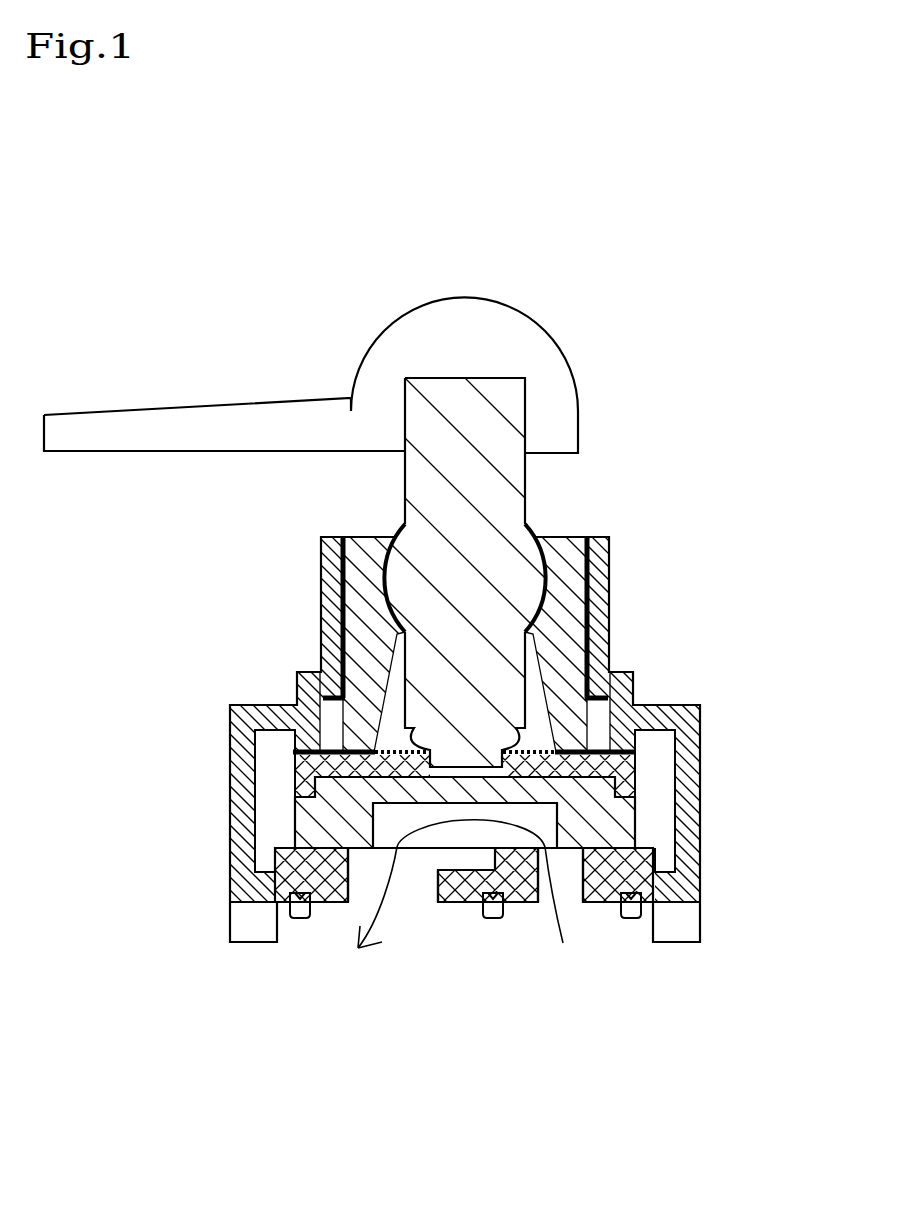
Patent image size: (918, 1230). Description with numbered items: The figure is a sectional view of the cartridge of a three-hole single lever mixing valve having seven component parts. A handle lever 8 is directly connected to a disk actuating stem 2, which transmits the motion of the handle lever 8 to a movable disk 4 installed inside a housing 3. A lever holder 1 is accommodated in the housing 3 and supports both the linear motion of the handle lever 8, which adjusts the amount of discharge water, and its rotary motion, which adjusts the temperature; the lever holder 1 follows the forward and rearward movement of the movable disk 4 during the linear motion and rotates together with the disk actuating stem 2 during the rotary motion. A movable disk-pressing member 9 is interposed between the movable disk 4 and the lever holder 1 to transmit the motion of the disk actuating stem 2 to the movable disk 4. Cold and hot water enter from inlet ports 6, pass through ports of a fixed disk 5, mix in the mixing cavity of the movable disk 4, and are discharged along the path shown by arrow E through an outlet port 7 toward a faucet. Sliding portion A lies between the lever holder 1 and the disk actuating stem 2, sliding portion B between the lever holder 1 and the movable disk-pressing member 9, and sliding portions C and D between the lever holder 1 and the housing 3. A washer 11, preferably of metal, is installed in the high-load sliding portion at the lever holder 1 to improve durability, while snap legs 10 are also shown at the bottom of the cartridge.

The lever holder 1 is at (556, 545).
The disk actuating stem 2 is at (470, 443).
The housing 3 is at (602, 608).
The movable disk 4 is at (587, 820).
The fixed disk 5 is at (617, 882).
The inlet ports 6 is at (570, 893).
The outlet port 7 is at (422, 887).
The handle lever 8 is at (272, 415).
The movable disk-pressing member 9 is at (303, 762).
The snap leg 10 is at (300, 912).
The washer 11 is at (293, 752).
The sliding portion A is at (363, 537).
The sliding portion B is at (290, 742).
The sliding portion C is at (317, 670).
The sliding portion D is at (335, 592).
The arrow E is at (449, 912).